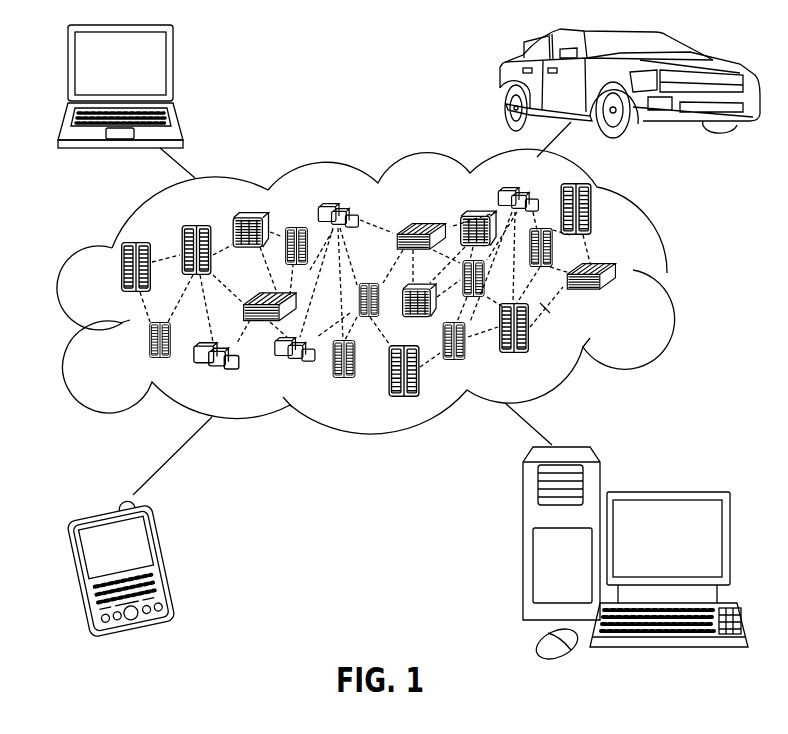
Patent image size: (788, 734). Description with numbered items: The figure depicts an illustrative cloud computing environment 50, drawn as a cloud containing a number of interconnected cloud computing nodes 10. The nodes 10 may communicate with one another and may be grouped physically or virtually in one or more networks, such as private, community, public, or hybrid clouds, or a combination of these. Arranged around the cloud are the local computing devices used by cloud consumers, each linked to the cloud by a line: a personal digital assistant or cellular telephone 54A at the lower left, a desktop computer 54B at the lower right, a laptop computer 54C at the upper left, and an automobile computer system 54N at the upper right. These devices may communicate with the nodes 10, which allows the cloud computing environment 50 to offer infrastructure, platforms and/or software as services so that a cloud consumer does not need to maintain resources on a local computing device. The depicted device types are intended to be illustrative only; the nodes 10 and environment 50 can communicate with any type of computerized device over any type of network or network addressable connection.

The cloud computing nodes 10 is at (623, 298).
The cloud computing environment 50 is at (660, 273).
The personal digital assistant (PDA) or cellular telephone 54A is at (165, 562).
The desktop computer 54B is at (663, 492).
The laptop computer 54C is at (175, 72).
The automobile computer system 54N is at (500, 86).